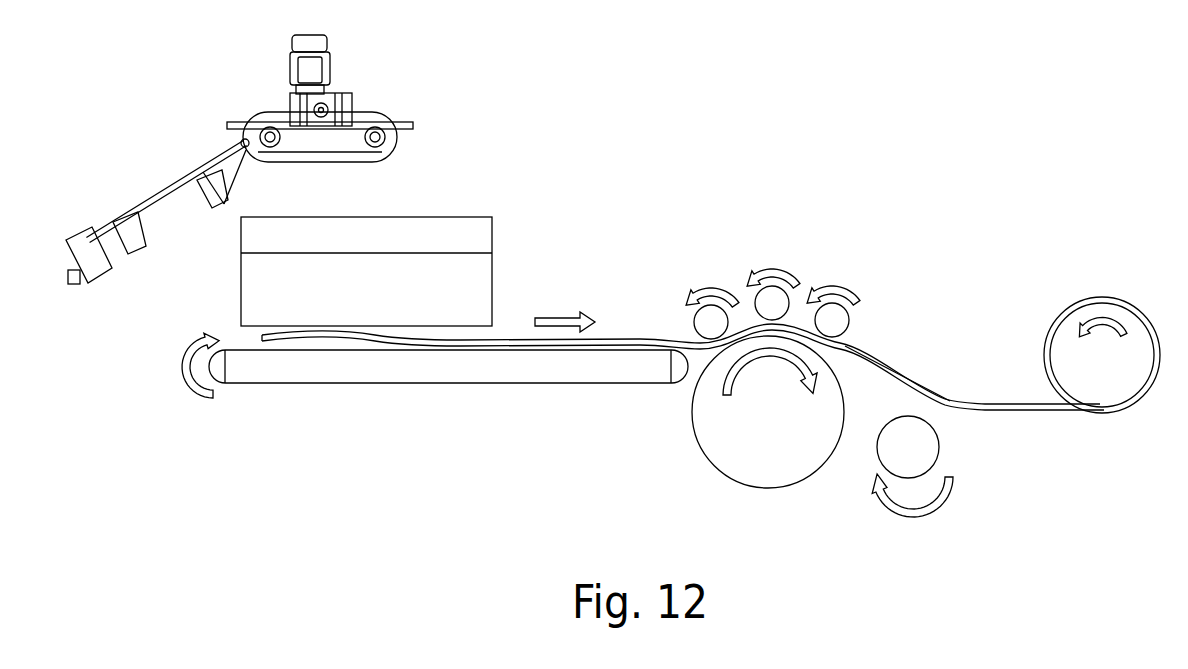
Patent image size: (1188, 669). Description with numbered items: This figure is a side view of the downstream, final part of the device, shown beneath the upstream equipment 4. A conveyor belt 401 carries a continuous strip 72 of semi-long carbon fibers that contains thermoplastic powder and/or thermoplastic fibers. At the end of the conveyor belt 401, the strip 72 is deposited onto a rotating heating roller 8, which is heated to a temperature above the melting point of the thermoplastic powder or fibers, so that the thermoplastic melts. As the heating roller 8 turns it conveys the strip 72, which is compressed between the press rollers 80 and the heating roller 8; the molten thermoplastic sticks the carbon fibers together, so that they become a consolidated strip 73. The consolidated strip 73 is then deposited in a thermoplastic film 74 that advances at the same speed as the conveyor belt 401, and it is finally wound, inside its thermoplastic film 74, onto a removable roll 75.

The feed device / loading station 4 is at (452, 216).
The conveyor belt 401 is at (420, 372).
The continuous strip of semi-long carbon fibers 72 is at (522, 336).
The press rollers 80 is at (711, 305).
The heating roller 8 is at (723, 435).
The consolidated strip 73 is at (888, 378).
The thermoplastic film 74 is at (925, 448).
The removable roll 75 is at (1122, 410).